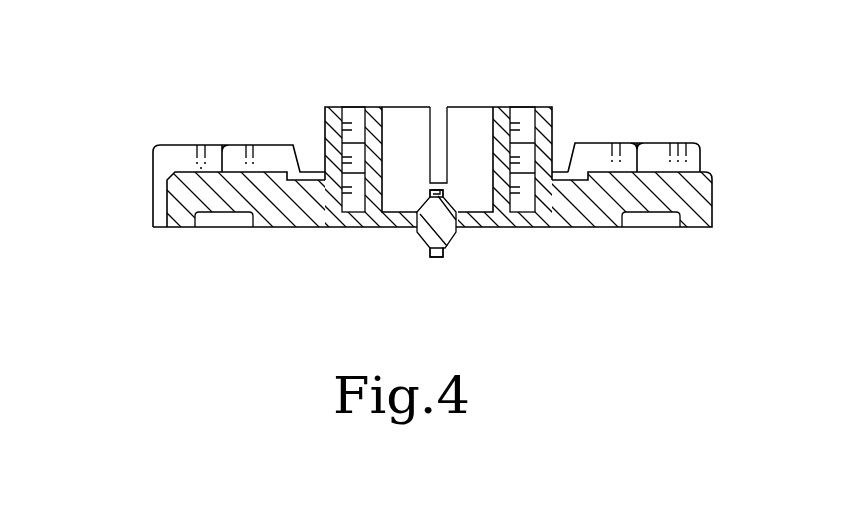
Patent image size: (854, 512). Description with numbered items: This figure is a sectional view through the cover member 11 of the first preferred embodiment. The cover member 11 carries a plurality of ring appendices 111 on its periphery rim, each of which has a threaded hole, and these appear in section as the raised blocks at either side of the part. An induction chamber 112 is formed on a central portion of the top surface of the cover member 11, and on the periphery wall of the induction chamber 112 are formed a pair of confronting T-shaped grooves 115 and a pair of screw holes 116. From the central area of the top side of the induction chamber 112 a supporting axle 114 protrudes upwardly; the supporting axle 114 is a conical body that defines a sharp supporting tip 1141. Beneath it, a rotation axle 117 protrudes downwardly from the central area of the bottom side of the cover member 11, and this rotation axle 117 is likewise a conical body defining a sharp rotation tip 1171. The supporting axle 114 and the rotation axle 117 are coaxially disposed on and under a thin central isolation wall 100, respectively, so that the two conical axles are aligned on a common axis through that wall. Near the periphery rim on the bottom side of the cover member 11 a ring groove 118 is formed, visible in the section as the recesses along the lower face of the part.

The cover member 11 is at (205, 192).
The central isolation wall 100 is at (405, 218).
The ring appendix 111 is at (192, 157).
The induction chamber 112 is at (458, 122).
The supporting axle 114 is at (432, 192).
The supporting tip 1141 is at (435, 193).
The T-shaped groove 115 is at (437, 122).
The screw hole 116 is at (353, 117).
The rotation axle 117 is at (438, 238).
The rotation tip 1171 is at (437, 255).
The ring groove 118 is at (228, 215).